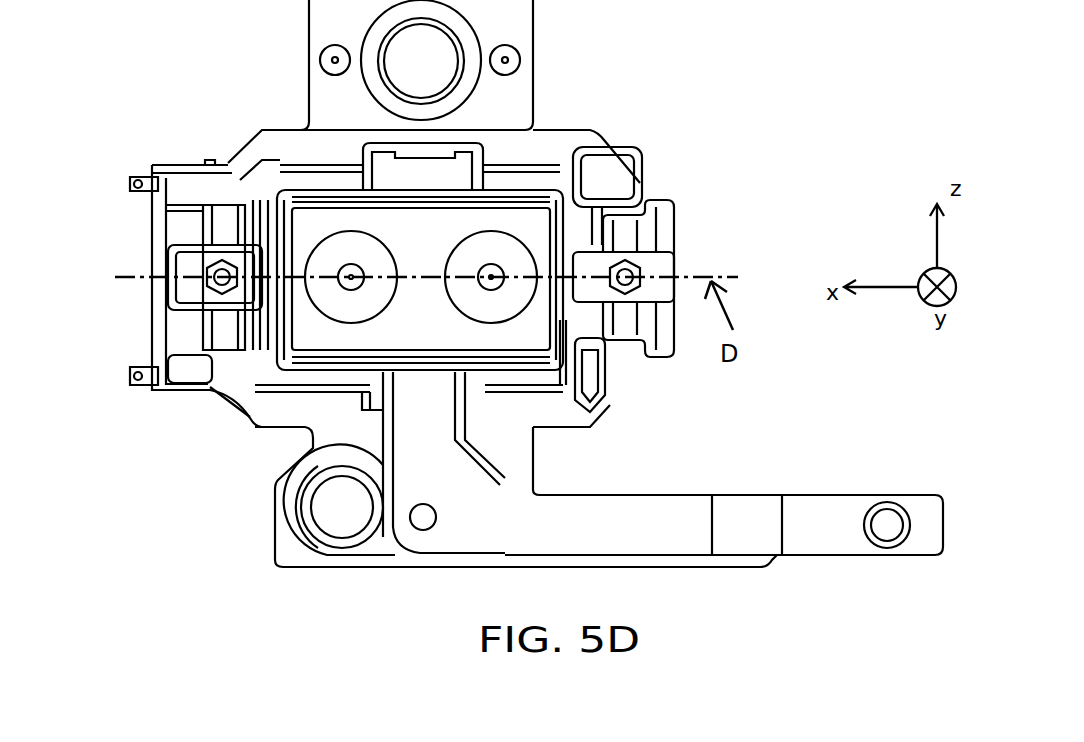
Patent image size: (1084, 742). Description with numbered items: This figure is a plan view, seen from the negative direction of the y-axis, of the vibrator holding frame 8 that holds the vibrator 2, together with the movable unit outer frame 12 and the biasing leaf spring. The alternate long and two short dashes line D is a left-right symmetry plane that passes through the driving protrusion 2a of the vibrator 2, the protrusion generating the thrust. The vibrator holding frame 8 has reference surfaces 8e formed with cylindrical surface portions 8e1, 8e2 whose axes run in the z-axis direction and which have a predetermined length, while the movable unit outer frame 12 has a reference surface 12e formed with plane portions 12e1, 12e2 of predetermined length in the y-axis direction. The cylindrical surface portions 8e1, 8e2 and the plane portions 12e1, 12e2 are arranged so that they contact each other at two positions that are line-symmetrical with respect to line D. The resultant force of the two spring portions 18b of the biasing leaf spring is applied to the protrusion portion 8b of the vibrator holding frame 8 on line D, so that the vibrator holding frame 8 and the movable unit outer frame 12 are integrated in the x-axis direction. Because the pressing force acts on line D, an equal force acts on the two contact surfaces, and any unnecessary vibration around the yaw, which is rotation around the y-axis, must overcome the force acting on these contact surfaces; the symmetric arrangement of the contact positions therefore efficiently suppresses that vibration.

The vibrator 2 is at (325, 328).
The driving protrusion 2a is at (350, 231).
The vibrator holding frame 8 is at (156, 258).
The protrusion portion 8b is at (168, 277).
The spring portion 18b is at (168, 258).
The movable unit outer frame 12 is at (672, 230).
The reference surface 8e is at (719, 250).
The reference surface 12e is at (719, 250).
The cylindrical surface portion 8e1 is at (721, 152).
The plane portion 12e1 is at (593, 193).
The cylindrical surface portion 8e2 is at (719, 380).
The plane portion 12e2 is at (597, 350).